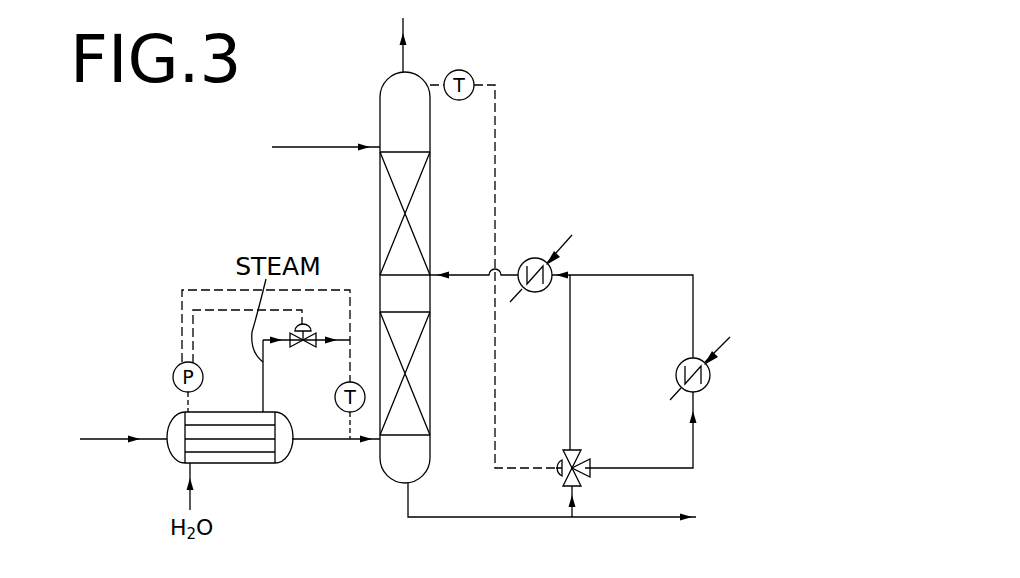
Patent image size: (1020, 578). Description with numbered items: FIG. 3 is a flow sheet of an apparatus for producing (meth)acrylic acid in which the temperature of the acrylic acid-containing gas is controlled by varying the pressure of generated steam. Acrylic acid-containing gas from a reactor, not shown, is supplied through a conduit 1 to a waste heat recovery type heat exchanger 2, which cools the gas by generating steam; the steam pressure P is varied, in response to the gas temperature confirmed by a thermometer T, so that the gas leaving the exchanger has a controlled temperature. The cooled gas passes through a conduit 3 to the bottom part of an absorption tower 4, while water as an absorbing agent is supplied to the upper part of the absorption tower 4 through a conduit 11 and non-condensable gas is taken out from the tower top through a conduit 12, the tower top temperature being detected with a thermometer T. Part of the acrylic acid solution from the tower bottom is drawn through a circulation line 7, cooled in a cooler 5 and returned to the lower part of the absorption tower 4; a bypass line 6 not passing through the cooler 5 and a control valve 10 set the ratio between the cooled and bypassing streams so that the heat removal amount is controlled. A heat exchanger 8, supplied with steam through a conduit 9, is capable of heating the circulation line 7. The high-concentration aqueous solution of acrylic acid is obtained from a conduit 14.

The conduit 1 is at (117, 437).
The waste heat recovery type heat exchanger 2 is at (243, 472).
The conduit 3 is at (325, 446).
The absorption tower 4 is at (424, 381).
The cooler 5 is at (713, 376).
The bypass line 6 is at (575, 373).
The circulation line 7 is at (698, 318).
The heat exchanger 8 is at (535, 258).
The conduit 9 is at (557, 264).
The control valve 10 is at (583, 462).
The conduit 11 is at (306, 146).
The conduit 12 is at (405, 58).
The conduit 14 is at (626, 516).